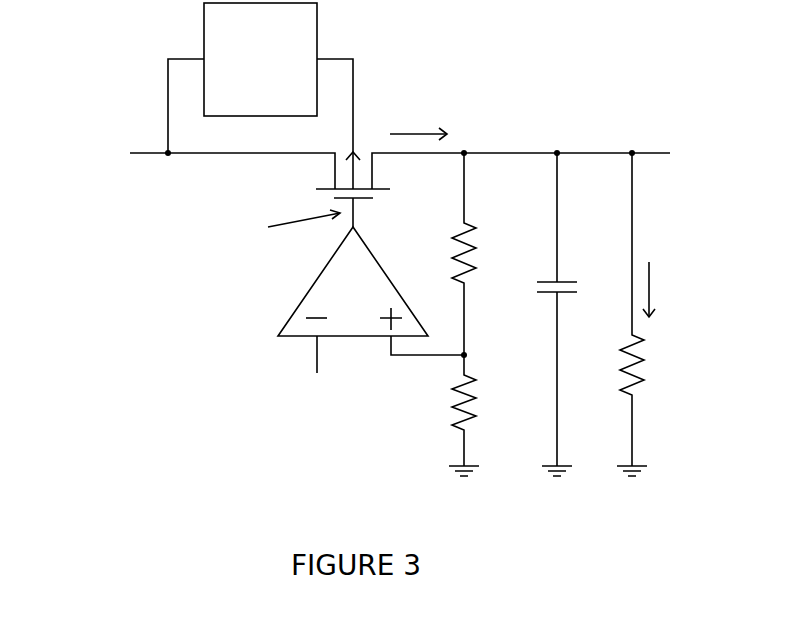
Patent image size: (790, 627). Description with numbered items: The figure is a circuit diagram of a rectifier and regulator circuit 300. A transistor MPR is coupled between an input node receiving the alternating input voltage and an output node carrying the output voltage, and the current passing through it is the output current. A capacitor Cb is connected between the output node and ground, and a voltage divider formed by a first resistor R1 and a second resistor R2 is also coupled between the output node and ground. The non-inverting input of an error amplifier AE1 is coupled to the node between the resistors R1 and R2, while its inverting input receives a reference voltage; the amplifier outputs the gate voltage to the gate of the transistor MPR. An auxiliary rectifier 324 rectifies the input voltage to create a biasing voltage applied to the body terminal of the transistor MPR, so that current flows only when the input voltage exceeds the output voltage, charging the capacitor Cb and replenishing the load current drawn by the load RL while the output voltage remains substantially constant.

The rectifier and regulator circuit 300 is at (130, 342).
The auxiliary rectifier 324 is at (282, 92).
The transistor MPR is at (316, 194).
The error amplifier AE1 is at (353, 281).
The first resistor R1 is at (490, 254).
The second resistor R2 is at (488, 415).
The capacitor Cb is at (574, 314).
The load RL is at (613, 314).